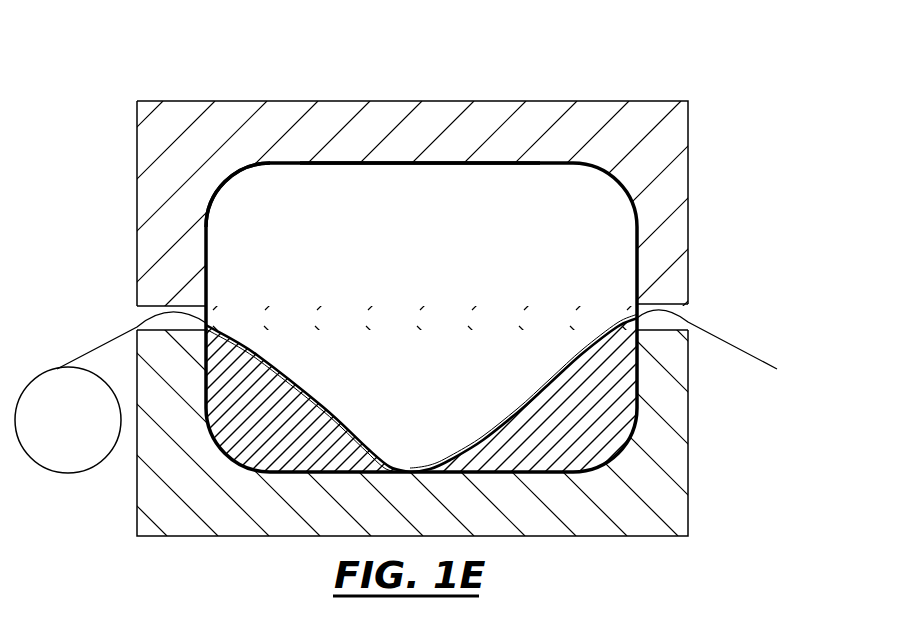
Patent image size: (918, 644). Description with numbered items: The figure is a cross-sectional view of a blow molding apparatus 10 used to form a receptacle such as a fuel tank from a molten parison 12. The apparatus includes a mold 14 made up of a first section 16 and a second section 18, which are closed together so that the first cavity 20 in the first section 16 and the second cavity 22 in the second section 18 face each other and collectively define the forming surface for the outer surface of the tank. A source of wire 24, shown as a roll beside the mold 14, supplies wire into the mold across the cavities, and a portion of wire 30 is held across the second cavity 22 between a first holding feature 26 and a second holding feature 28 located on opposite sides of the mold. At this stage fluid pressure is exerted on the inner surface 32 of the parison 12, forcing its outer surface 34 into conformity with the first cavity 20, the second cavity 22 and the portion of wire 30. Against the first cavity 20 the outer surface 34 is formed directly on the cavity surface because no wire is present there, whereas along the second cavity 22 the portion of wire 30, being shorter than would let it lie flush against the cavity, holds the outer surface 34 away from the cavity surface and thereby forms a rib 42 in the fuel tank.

The blow molding apparatus 10 is at (444, 270).
The molten parison 12 is at (634, 303).
The mold 14 is at (444, 318).
The first section 16 is at (688, 169).
The second section 18 is at (688, 493).
The first cavity 20 is at (409, 306).
The second cavity 22 is at (327, 402).
The source of wire 24 is at (72, 474).
The first holding feature 26 is at (145, 327).
The second holding feature 28 is at (670, 320).
The portion of wire 30 is at (553, 381).
The inner surface 32 is at (525, 164).
The outer surface 34 is at (238, 172).
The rib 42 is at (487, 425).